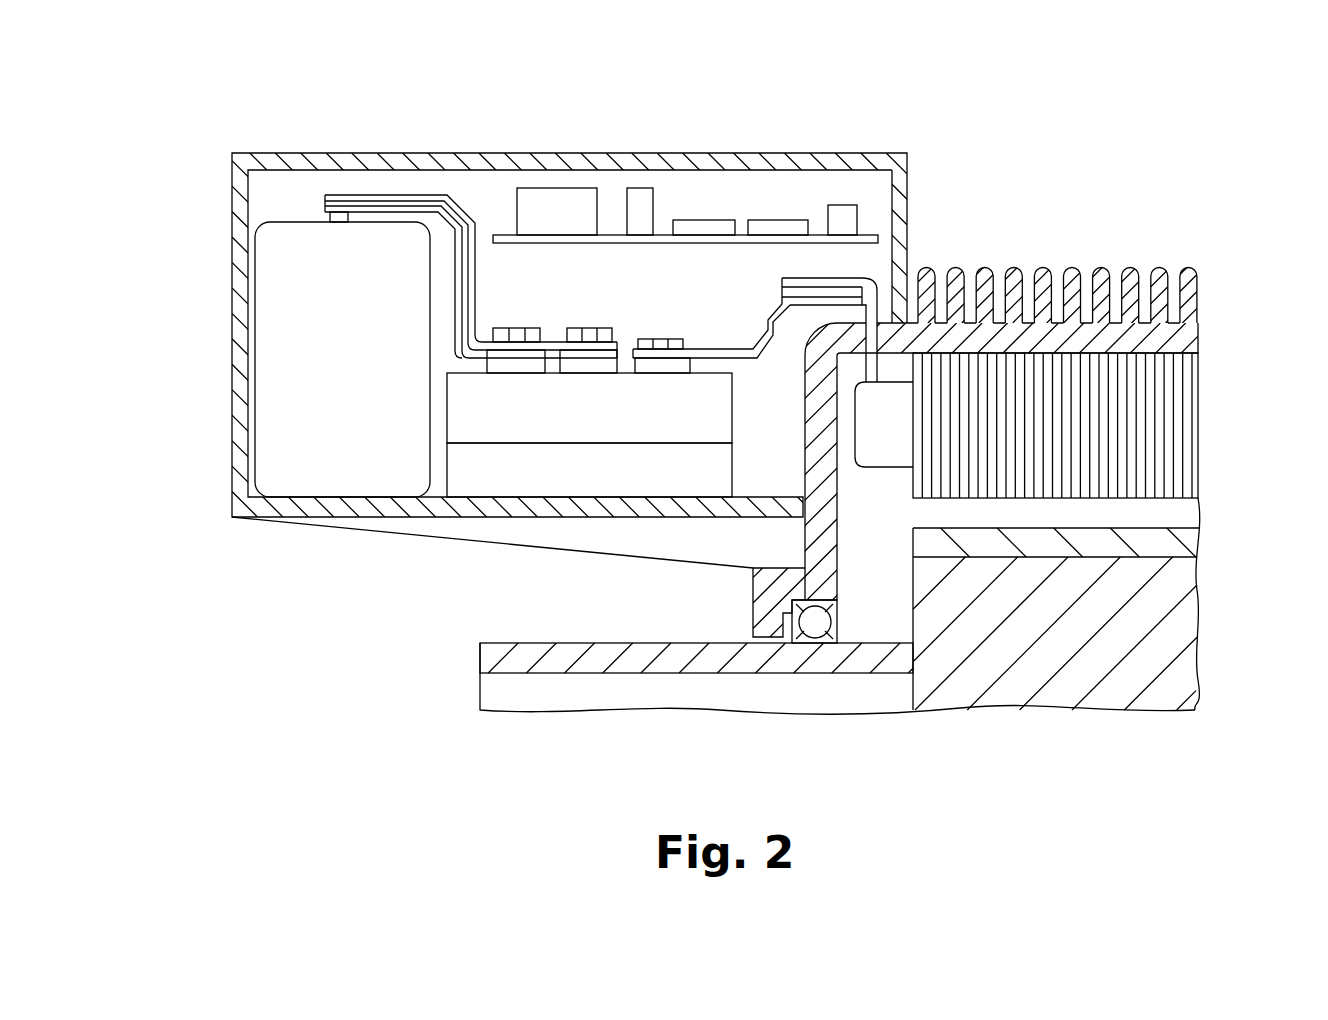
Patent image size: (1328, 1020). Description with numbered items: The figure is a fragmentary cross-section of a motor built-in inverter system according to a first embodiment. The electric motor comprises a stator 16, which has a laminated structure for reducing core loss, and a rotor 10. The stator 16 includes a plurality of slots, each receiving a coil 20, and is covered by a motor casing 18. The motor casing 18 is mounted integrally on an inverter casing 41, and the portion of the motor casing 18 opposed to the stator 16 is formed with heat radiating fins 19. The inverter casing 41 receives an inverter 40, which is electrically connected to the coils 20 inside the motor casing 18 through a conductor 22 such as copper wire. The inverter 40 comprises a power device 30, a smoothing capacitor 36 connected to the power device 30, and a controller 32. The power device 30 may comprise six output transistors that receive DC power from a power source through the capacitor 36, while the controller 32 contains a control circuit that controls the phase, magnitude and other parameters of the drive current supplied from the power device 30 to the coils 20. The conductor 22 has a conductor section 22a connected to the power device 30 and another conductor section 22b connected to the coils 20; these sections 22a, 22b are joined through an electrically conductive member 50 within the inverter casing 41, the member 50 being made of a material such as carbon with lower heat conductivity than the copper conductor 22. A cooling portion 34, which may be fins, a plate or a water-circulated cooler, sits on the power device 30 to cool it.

The rotor 10 is at (1178, 640).
The stator 16 is at (1190, 428).
The motor casing 18 is at (1190, 345).
The heat radiating fins 19 is at (1213, 270).
The coil 20 is at (877, 460).
The conductor 22 is at (797, 322).
The conductor section 22a is at (725, 345).
The conductor section 22b is at (878, 297).
The power device 30 is at (697, 382).
The controller 32 is at (570, 180).
The cooling portion 34 is at (573, 480).
The smoothing capacitor 36 is at (310, 452).
The inverter 40 is at (680, 132).
The inverter casing 41 is at (333, 162).
The electrically conductive member 50 is at (895, 243).